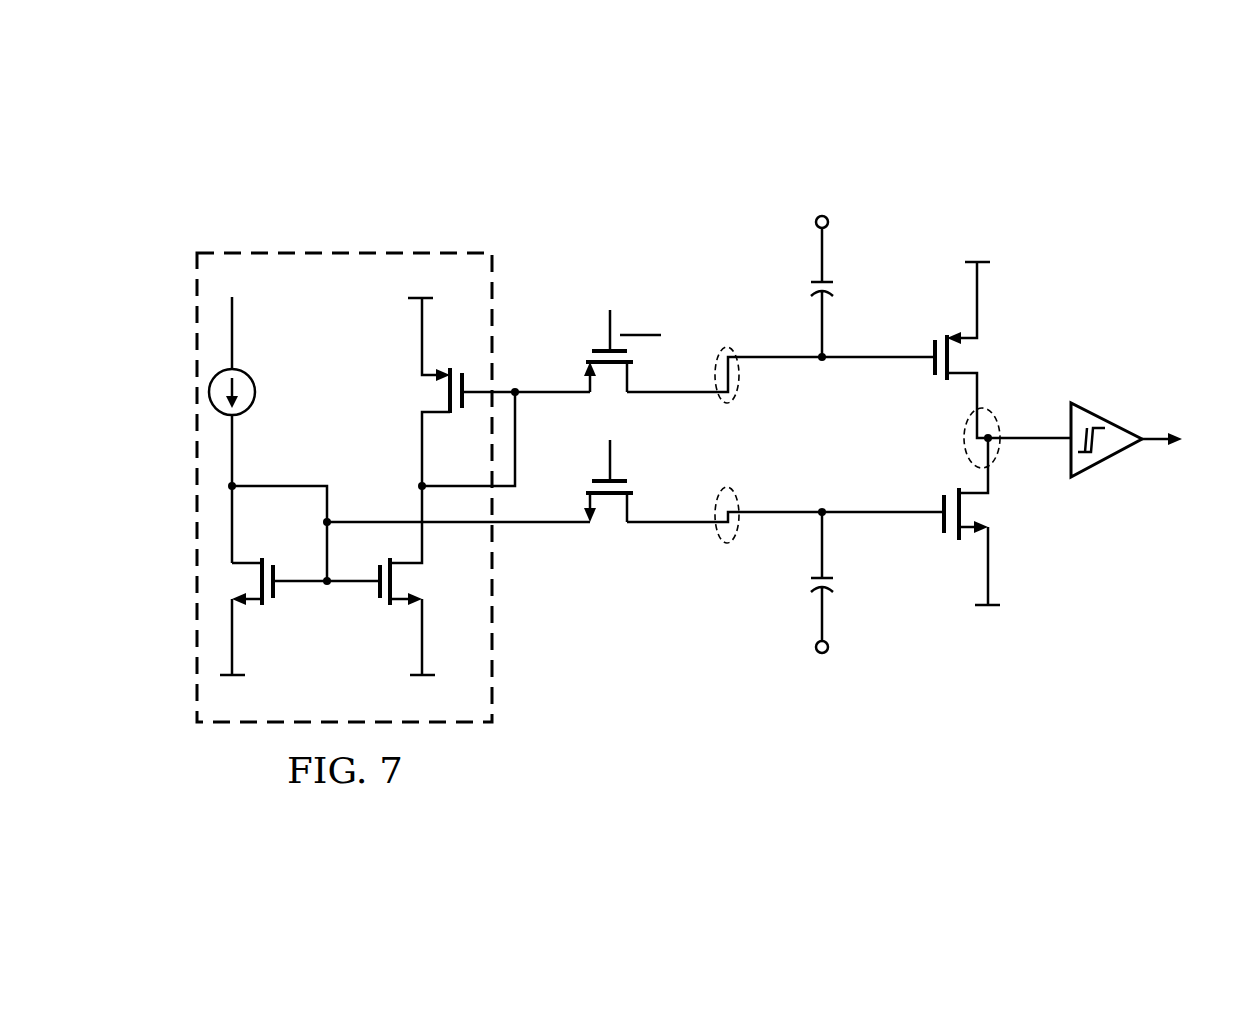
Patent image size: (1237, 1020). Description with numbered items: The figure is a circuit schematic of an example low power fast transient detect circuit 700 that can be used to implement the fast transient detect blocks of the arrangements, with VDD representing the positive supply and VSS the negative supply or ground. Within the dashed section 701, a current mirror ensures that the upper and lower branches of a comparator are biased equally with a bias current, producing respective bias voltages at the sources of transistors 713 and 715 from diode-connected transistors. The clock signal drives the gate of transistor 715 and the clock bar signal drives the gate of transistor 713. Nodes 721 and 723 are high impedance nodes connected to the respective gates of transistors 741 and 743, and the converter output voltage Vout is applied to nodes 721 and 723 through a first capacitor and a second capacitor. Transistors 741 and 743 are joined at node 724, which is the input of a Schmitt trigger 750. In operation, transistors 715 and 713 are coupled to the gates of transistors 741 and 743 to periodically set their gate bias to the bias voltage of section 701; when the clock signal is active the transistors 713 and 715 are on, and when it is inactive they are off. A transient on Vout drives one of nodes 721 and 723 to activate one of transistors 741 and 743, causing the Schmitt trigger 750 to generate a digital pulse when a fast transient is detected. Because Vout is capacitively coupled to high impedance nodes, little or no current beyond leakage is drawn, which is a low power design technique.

The low power fast transient detect circuit 700 is at (789, 147).
The current mirror section 701 is at (313, 246).
The transistor 713 is at (600, 350).
The transistor 715 is at (600, 480).
The node 721 is at (727, 347).
The node 723 is at (727, 544).
The node 724 is at (983, 408).
The transistor 741 is at (930, 347).
The transistor 743 is at (941, 521).
The Schmitt trigger 750 is at (1108, 421).